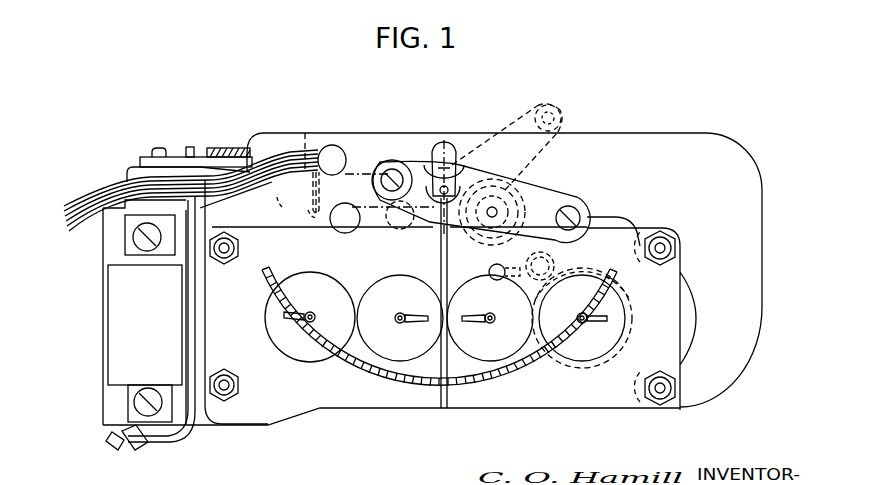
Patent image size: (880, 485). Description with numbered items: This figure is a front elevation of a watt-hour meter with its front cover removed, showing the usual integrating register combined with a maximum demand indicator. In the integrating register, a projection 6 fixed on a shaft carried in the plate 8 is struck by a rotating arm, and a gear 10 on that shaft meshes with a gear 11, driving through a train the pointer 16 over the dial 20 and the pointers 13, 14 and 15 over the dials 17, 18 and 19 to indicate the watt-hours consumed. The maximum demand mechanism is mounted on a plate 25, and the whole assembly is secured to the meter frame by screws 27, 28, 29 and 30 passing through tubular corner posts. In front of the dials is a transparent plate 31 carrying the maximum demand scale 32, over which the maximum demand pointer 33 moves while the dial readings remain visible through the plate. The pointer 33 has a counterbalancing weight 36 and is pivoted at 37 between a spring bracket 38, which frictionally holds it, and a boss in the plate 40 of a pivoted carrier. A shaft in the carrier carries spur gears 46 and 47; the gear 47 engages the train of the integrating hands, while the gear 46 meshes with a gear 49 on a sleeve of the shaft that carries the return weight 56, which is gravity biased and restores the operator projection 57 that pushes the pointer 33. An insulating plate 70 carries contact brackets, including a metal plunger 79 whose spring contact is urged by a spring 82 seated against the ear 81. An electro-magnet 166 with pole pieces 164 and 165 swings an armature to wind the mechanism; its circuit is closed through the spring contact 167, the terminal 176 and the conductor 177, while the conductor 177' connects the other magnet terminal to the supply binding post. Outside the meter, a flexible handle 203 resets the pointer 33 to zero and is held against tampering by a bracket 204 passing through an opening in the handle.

The projection 6 is at (532, 261).
The plate 8 is at (449, 326).
The gear 10 is at (492, 266).
The gear 11 is at (585, 262).
The pointer 13 is at (283, 316).
The pointer 14 is at (412, 310).
The pointer 15 is at (482, 322).
The pointer 16 is at (560, 332).
The dial 17 is at (312, 273).
The dial 18 is at (396, 276).
The dial 19 is at (478, 283).
The dial 20 is at (603, 327).
The plate 25 is at (757, 192).
The screw 27 is at (230, 241).
The screw 28 is at (223, 398).
The screw 29 is at (668, 240).
The screw 30 is at (662, 393).
The transparent plate 31 is at (674, 303).
The maximum demand scale 32 is at (357, 366).
The maximum demand pointer 33 is at (438, 364).
The counterbalancing weight 36 is at (456, 170).
The pivot 37 is at (457, 186).
The bracket 38 is at (433, 170).
The plate 40 is at (578, 205).
The spur gear 46 is at (525, 200).
The spur gear 47 is at (552, 180).
The gear 49 is at (420, 164).
The return weight 56 is at (522, 186).
The projection 57 is at (438, 230).
The plate 70 is at (144, 160).
The metal plunger 79 is at (160, 152).
The ear 81 is at (190, 147).
The spring 82 is at (220, 148).
The pole piece 164 is at (125, 241).
The pole piece 165 is at (128, 401).
The electro-magnet 166 is at (115, 313).
The spring contact 167 is at (138, 450).
The terminal 176 is at (112, 446).
The conductor 177 is at (161, 335).
The conductor 177' is at (201, 188).
The handle 203 is at (340, 213).
The bracket 204 is at (304, 158).